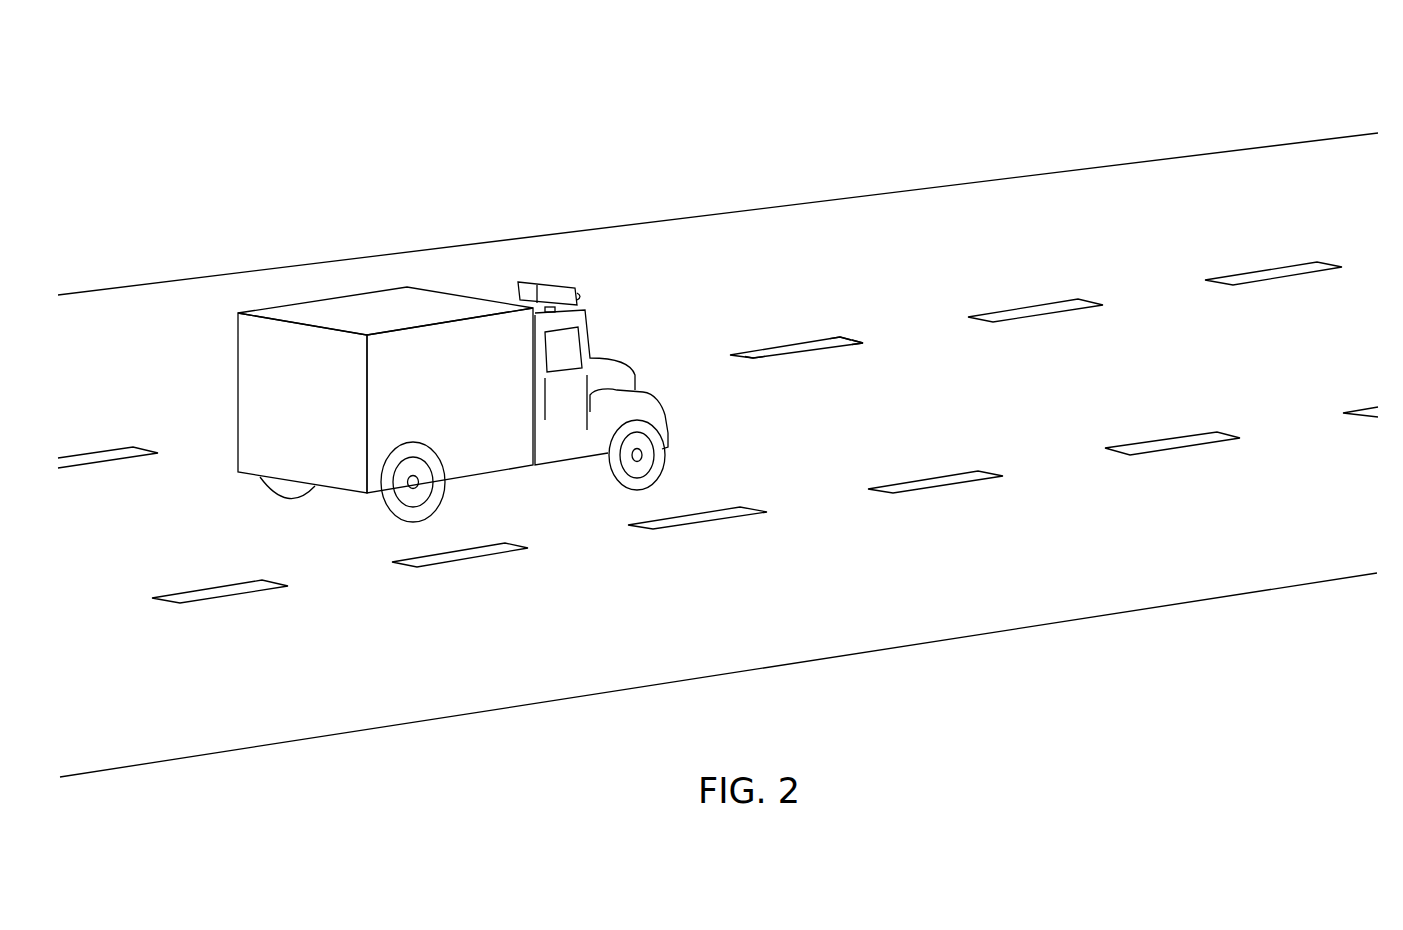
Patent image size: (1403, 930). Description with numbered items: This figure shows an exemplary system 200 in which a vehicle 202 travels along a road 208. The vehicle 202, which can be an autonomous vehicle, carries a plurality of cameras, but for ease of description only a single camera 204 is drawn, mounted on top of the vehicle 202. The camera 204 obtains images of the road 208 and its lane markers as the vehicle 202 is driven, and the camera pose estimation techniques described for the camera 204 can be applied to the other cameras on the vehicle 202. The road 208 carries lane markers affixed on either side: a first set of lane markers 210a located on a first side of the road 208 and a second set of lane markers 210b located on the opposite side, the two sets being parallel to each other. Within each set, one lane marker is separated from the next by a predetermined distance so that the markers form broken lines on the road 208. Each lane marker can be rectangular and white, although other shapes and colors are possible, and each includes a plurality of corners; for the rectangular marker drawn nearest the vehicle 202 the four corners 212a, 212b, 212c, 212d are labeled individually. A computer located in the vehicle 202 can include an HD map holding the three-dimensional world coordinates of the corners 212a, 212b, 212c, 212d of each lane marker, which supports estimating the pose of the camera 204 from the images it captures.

The system 200 is at (222, 106).
The vehicle 202 is at (262, 360).
The camera 204 is at (562, 278).
The road 208 is at (550, 680).
The first set of lane markers 210a is at (1013, 322).
The second set of lane markers 210b is at (1193, 432).
The corner 212a is at (730, 355).
The corner 212b is at (753, 360).
The corner 212c is at (863, 345).
The corner 212d is at (840, 337).